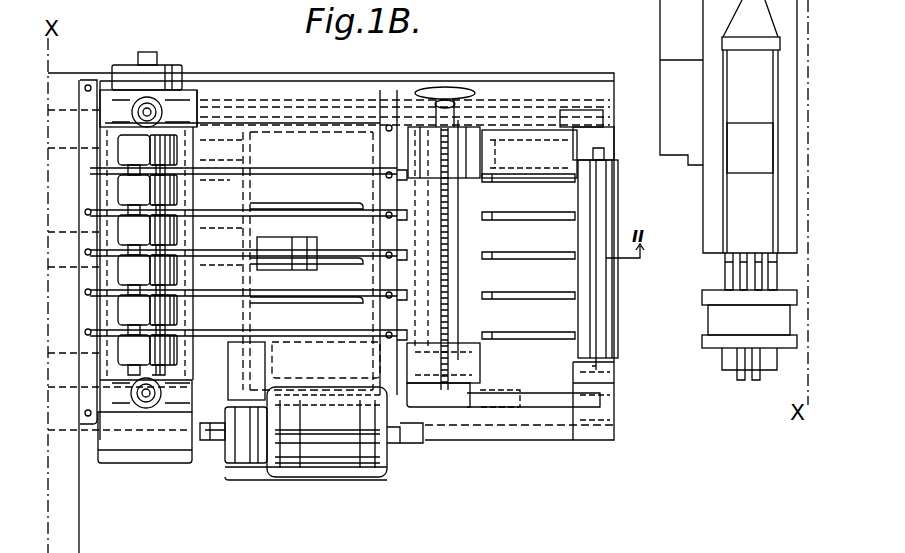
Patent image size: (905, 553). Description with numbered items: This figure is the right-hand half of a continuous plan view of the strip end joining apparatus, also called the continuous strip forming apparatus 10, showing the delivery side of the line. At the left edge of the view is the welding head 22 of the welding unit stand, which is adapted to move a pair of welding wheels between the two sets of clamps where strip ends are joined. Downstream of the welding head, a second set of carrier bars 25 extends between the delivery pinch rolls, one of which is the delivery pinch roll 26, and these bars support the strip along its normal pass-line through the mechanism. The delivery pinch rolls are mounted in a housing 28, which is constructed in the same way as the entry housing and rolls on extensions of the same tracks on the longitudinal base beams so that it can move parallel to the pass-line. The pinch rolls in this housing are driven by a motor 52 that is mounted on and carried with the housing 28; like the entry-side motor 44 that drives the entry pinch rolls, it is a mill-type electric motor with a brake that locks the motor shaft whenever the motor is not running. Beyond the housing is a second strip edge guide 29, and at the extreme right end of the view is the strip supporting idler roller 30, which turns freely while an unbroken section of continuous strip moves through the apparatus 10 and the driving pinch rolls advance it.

The continuous strip forming apparatus 10 is at (292, 61).
The welding head 22 is at (740, 85).
The second set of carrier bars 25 is at (341, 174).
The delivery pinch roll 26 is at (175, 190).
The housing 28 is at (160, 78).
The second strip edge guide 29 is at (462, 135).
The strip supporting idler roller 30 is at (605, 292).
The motor 44 is at (182, 8).
The motor 52 is at (333, 450).